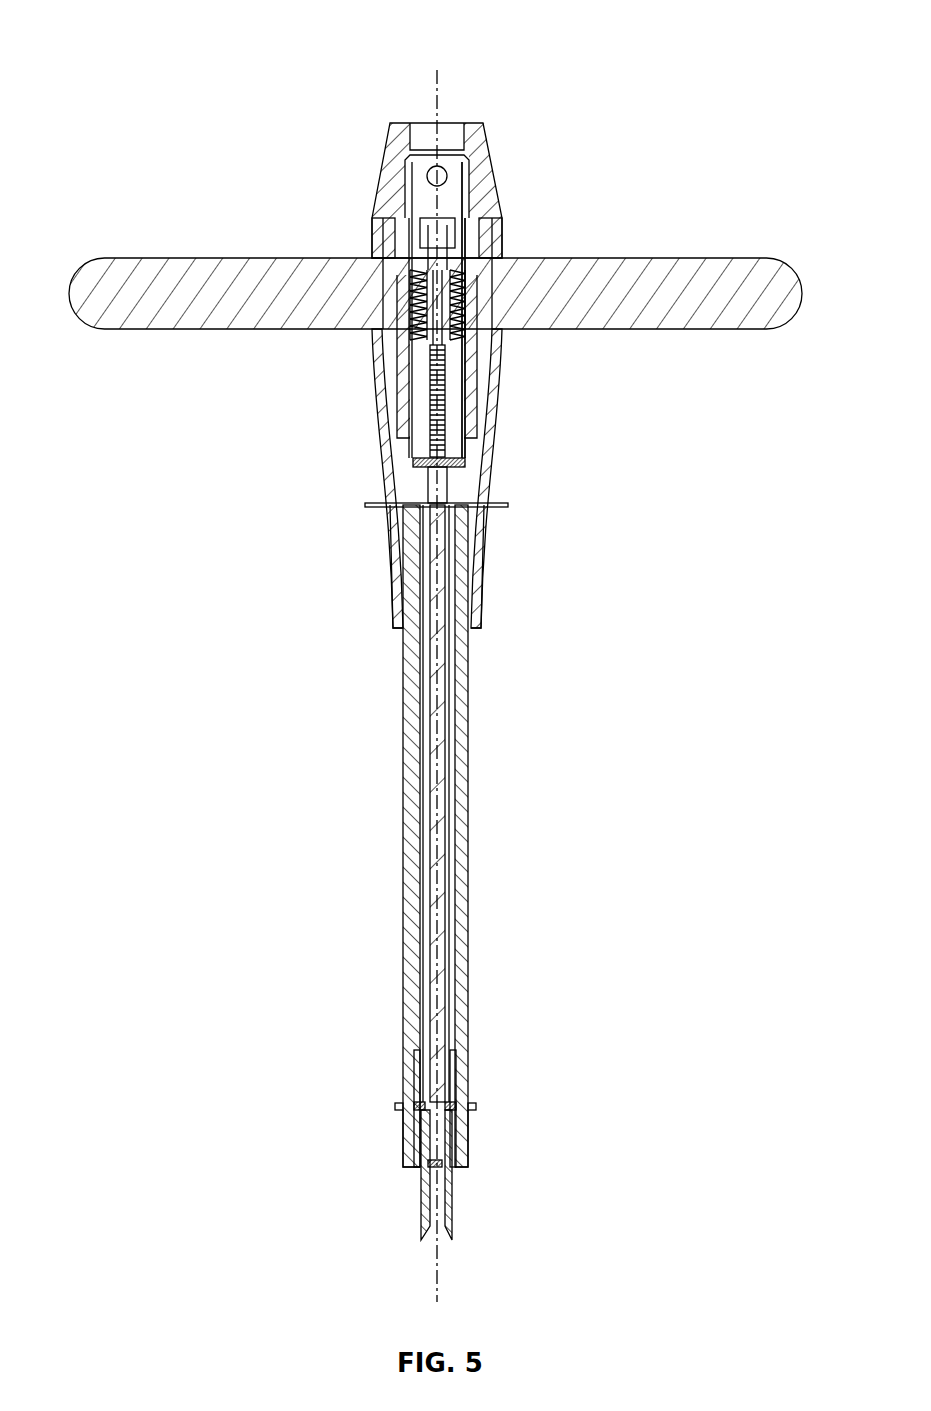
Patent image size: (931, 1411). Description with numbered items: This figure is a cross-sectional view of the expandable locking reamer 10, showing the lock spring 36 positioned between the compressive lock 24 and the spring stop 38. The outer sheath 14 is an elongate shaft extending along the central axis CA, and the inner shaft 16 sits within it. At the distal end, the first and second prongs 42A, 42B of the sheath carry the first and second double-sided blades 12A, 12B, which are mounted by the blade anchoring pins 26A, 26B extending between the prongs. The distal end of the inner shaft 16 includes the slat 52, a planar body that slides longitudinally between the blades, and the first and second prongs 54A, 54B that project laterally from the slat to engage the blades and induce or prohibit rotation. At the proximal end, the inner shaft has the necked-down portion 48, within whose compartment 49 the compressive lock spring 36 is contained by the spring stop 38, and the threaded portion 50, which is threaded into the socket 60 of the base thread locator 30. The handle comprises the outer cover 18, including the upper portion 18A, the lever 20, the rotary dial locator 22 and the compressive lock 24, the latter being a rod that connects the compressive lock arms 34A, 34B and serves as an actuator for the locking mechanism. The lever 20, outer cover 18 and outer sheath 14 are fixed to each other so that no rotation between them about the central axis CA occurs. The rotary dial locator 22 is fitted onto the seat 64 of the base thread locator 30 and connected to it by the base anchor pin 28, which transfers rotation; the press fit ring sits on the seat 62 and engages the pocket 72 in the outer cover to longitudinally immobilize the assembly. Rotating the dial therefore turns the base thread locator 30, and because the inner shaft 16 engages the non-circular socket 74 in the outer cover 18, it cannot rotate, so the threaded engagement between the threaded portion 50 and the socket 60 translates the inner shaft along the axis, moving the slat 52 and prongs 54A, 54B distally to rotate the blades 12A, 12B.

The central axis CA is at (440, 75).
The expandable locking reamer 10 is at (588, 133).
The first double-sided blade 12A is at (418, 1200).
The second double-sided blade 12B is at (450, 1218).
The outer sheath 14 is at (457, 700).
The inner shaft 16 is at (440, 785).
The outer cover 18 is at (478, 598).
The upper portion 18A is at (492, 380).
The lever 20 is at (157, 268).
The rotary dial locator 22 is at (398, 134).
The compressive lock 24 is at (508, 506).
The blade anchoring pin 26A is at (397, 1106).
The blade anchoring pin 26B is at (476, 1106).
The base anchor pin 28 is at (425, 178).
The base thread locator 30 is at (385, 345).
The compressive lock arm 34A is at (421, 870).
The compressive lock arm 34B is at (451, 892).
The compressive lock spring 36 is at (432, 365).
The spring stop 38 is at (432, 235).
The first prong 42A is at (407, 1137).
The second prong 42B is at (466, 1155).
The necked-down portion 48 is at (412, 280).
The compartment 49 is at (462, 330).
The threaded portion 50 is at (457, 393).
The slat 52 is at (420, 1160).
The first prong 54A is at (414, 1082).
The second prong 54B is at (460, 1085).
The socket 60 is at (456, 198).
The seat 62 is at (396, 244).
The seat 64 is at (470, 190).
The pocket 72 is at (412, 494).
The socket 74 is at (478, 508).